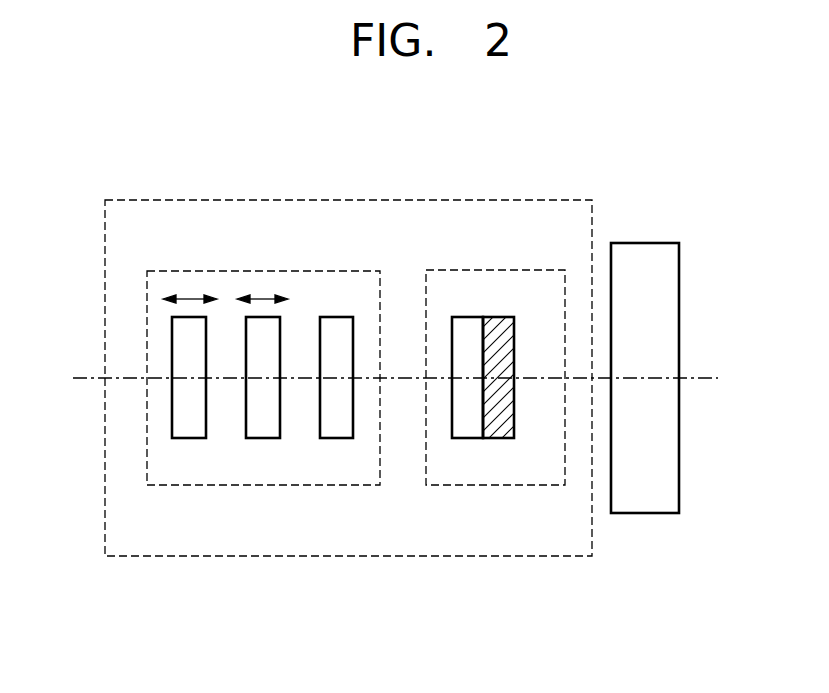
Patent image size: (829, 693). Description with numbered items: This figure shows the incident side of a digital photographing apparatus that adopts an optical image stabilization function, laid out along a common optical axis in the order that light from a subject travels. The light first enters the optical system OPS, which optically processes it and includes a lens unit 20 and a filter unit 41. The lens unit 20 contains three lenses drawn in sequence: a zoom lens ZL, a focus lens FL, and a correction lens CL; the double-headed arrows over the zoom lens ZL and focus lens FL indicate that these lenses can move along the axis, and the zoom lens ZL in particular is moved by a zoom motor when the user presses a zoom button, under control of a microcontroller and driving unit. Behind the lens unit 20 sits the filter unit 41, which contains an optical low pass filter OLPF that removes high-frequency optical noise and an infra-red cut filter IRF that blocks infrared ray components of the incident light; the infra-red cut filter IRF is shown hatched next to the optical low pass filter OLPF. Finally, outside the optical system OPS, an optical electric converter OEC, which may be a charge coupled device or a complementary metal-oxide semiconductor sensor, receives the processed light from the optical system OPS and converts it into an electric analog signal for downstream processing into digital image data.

The optical system OPS is at (349, 198).
The lens unit 20 is at (263, 268).
The filter unit 41 is at (500, 268).
The zoom lens ZL is at (189, 438).
The focus lens FL is at (262, 438).
The correction lens CL is at (336, 438).
The optical low pass filter OLPF is at (462, 438).
The infra-red cut filter IRF is at (503, 438).
The optical electric converter OEC is at (647, 242).